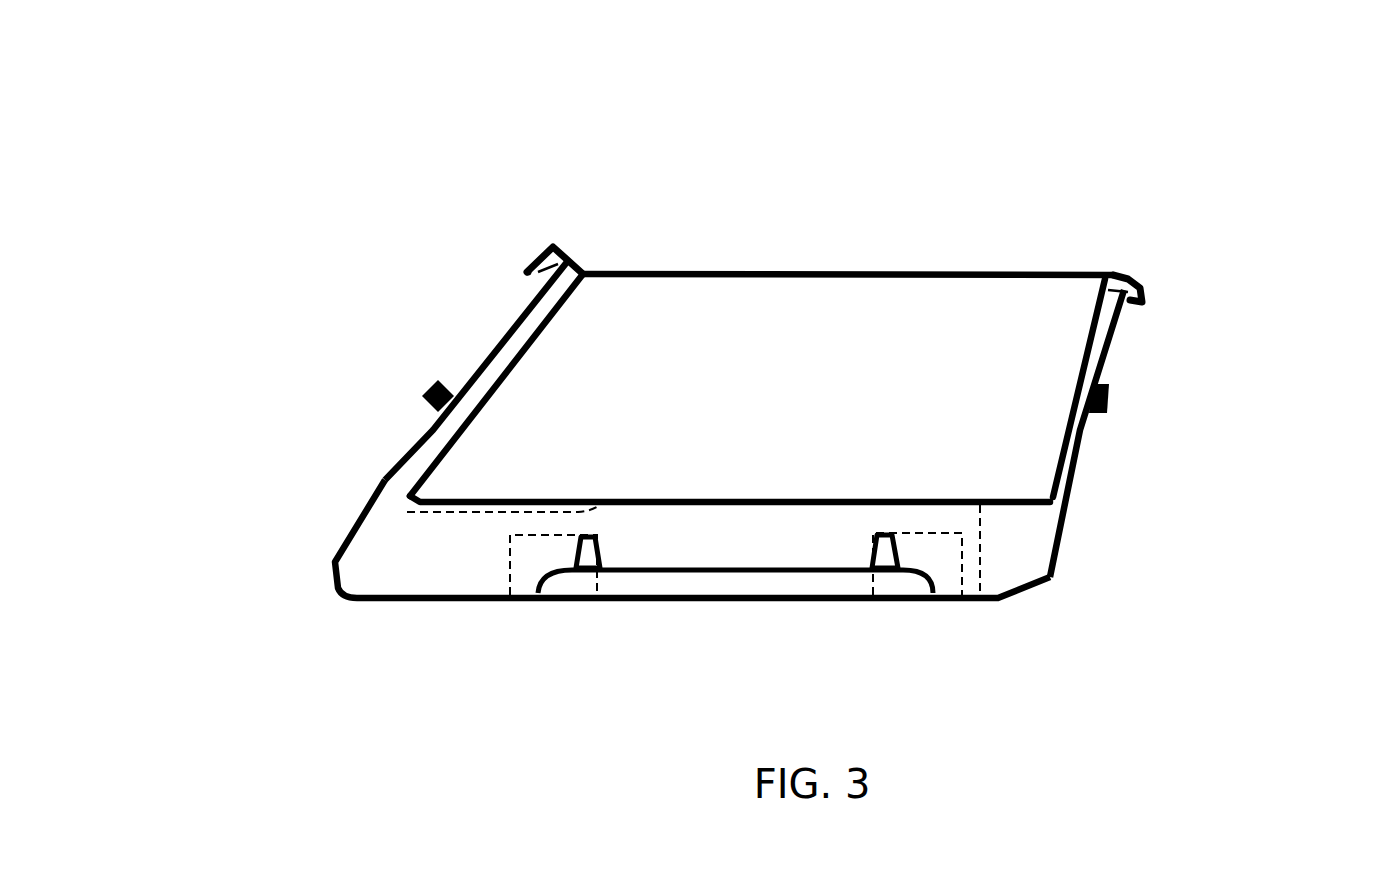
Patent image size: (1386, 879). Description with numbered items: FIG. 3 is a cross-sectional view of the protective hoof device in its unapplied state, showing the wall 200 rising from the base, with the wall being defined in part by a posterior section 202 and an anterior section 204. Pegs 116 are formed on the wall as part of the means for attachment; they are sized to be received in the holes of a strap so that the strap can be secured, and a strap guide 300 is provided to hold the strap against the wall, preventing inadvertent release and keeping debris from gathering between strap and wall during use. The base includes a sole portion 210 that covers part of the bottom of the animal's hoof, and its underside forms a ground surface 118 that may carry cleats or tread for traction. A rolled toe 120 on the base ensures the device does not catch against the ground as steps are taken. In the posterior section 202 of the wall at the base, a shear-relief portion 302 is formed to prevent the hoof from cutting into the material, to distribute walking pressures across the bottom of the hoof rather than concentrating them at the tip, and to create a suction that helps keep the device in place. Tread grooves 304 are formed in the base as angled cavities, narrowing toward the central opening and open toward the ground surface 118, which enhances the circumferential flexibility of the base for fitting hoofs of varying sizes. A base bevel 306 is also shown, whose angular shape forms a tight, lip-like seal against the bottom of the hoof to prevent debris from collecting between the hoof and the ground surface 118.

The pegs 116 is at (420, 400).
The ground surface 118 is at (455, 602).
The rolled toe 120 is at (333, 568).
The wall 200 is at (915, 327).
The posterior section 202 is at (1085, 438).
The anterior section 204 is at (475, 365).
The sole portion 210 is at (640, 498).
The strap guide 300 is at (553, 250).
The shear-relief portion 302 is at (487, 512).
The tread grooves 304 is at (880, 553).
The base bevel 306 is at (885, 580).